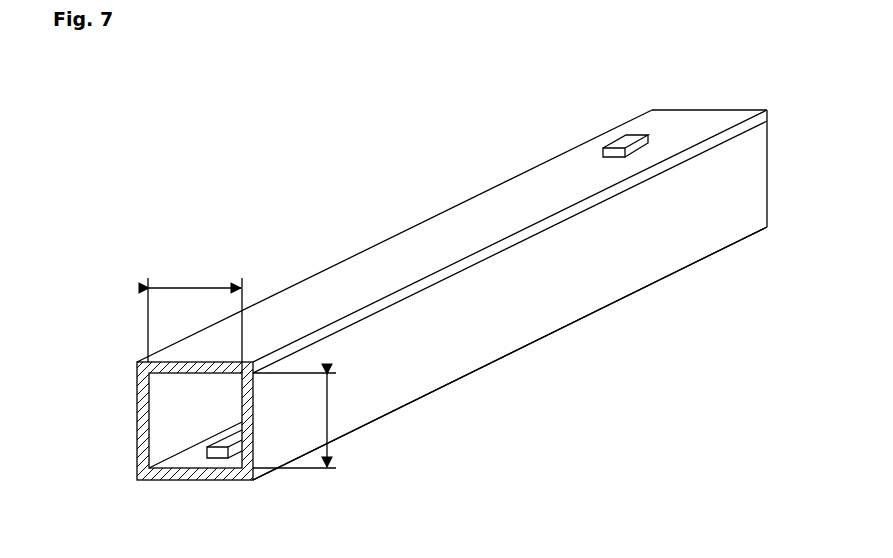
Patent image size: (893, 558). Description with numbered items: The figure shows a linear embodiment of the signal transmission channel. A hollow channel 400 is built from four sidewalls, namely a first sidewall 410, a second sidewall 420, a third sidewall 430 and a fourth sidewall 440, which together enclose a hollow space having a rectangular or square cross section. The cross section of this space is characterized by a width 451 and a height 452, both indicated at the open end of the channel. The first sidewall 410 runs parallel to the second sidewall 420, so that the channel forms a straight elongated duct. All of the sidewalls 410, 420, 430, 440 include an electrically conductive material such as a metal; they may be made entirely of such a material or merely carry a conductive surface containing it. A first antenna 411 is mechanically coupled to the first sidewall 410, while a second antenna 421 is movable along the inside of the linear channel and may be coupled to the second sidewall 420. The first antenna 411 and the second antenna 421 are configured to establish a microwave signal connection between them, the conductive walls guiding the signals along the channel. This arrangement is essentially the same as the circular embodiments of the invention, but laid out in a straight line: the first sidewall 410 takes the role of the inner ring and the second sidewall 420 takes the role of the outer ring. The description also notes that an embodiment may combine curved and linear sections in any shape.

The hollow channel 400 is at (300, 196).
The first sidewall 410 is at (212, 487).
The first antenna 411 is at (210, 450).
The second sidewall 420 is at (467, 230).
The second antenna 421 is at (627, 140).
The third sidewall 430 is at (178, 433).
The fourth sidewall 440 is at (500, 313).
The width 451 is at (198, 283).
The height 452 is at (330, 422).